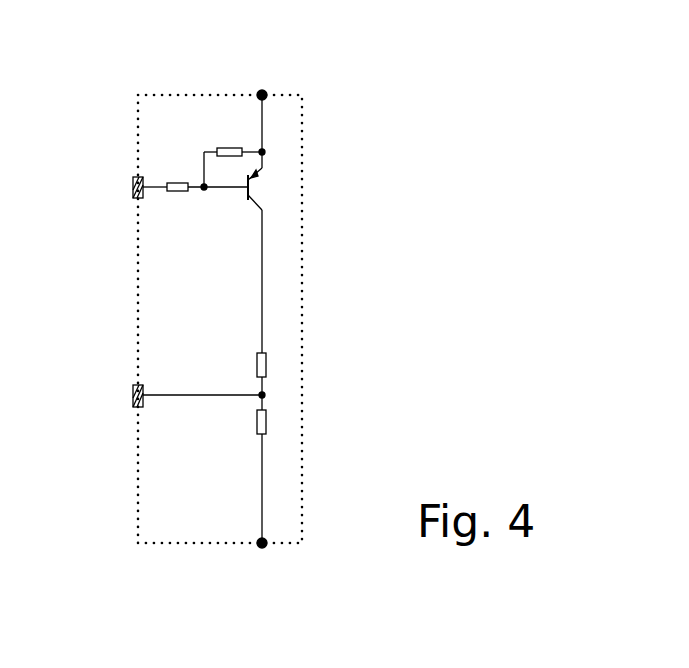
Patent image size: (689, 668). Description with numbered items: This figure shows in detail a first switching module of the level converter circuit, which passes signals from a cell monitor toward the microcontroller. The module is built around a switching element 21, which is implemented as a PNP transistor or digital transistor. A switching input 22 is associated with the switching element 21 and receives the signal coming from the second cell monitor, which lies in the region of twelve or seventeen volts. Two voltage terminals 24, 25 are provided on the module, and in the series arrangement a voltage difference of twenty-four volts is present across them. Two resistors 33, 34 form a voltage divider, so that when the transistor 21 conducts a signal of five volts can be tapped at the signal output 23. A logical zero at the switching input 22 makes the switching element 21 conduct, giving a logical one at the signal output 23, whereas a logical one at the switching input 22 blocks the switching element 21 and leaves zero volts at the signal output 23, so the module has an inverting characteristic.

The switching element 21 is at (245, 208).
The switching input 22 is at (128, 180).
The signal output 23 is at (124, 404).
The voltage terminal 24 is at (263, 554).
The voltage terminal 25 is at (266, 84).
The resistor 33 is at (270, 360).
The resistor 34 is at (272, 418).